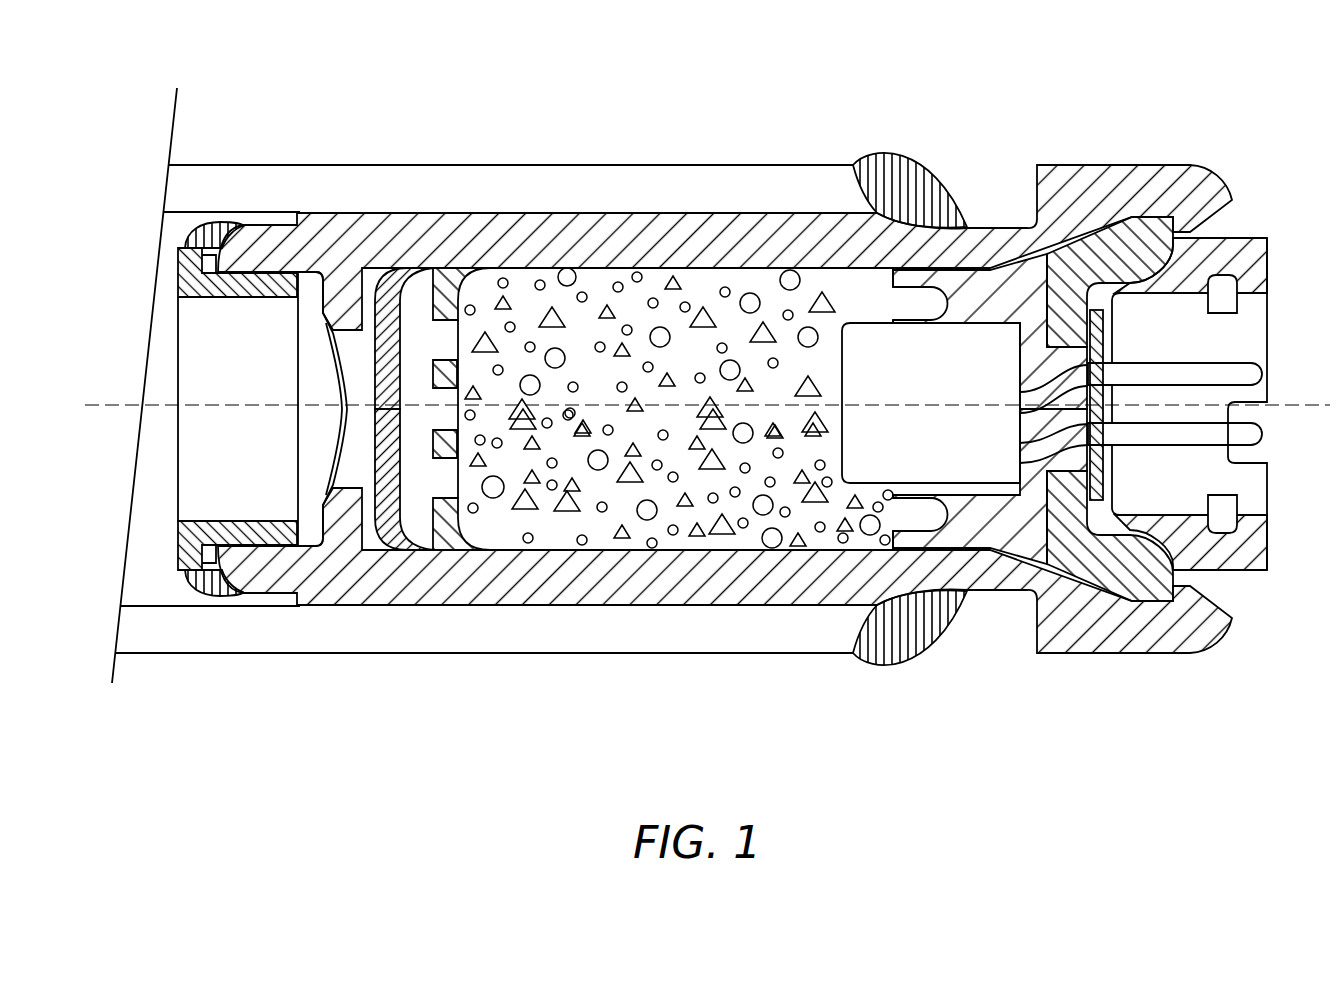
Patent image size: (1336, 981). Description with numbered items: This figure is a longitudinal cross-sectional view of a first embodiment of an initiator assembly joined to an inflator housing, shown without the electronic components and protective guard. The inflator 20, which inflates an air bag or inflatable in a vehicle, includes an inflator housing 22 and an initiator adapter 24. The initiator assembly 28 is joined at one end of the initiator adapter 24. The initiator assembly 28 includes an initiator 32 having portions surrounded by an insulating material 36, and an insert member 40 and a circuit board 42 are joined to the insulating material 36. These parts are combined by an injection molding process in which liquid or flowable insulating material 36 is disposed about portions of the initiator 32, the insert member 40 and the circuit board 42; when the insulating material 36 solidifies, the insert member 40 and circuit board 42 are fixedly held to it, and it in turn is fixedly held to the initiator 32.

The inflator 20 is at (862, 145).
The inflator housing 22 is at (662, 185).
The initiator adapter 24 is at (987, 240).
The initiator assembly 28 is at (1018, 559).
The initiator 32 is at (876, 494).
The insulating material 36 is at (1238, 260).
The insert member 40 is at (1108, 222).
The circuit board 42 is at (1097, 355).